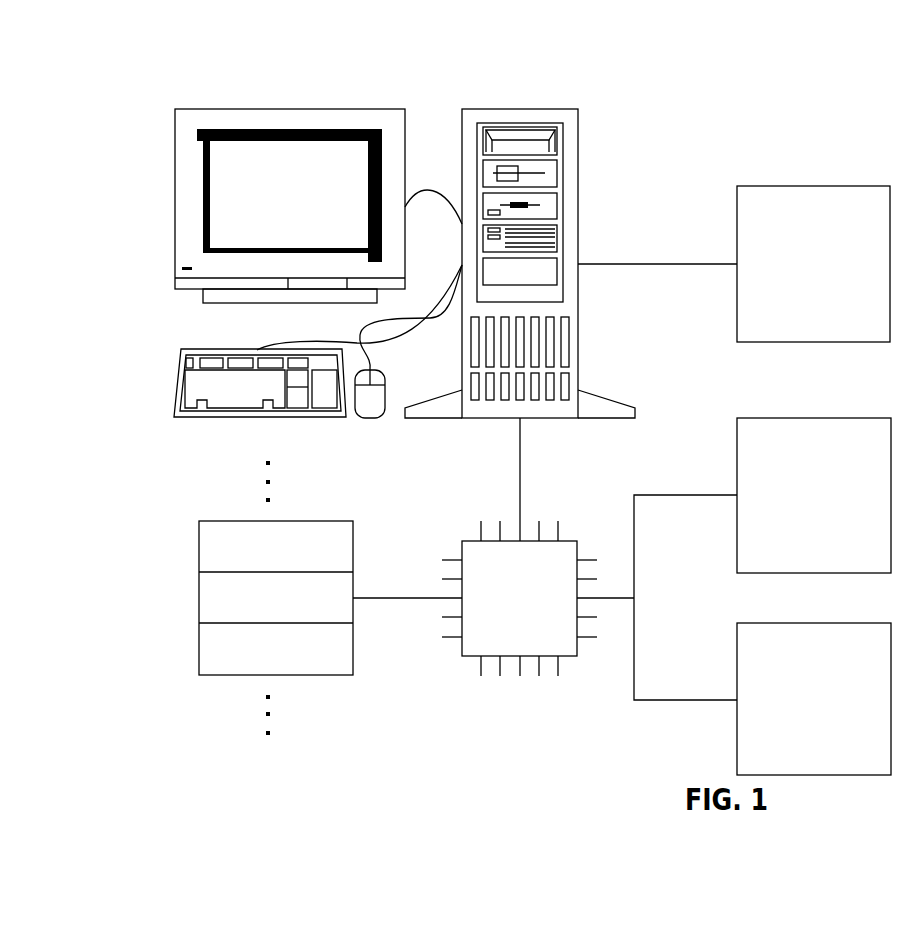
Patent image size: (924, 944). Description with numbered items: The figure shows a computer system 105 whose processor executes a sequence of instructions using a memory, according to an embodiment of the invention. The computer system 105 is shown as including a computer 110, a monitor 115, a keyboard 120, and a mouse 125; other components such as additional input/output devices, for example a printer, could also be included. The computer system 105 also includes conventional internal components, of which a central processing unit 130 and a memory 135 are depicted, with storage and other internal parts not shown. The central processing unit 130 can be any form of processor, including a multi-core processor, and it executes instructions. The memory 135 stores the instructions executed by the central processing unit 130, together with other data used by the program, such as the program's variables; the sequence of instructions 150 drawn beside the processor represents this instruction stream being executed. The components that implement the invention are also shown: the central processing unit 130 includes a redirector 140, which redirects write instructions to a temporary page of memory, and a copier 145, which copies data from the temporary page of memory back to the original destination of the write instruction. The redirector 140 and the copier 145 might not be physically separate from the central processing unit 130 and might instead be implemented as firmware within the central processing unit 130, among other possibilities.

The computer system 105 is at (114, 47).
The computer 110 is at (215, 109).
The monitor 115 is at (500, 109).
The keyboard 120 is at (213, 418).
The mouse 125 is at (370, 418).
The central processing unit 130 is at (462, 548).
The memory 135 is at (778, 186).
The redirector 140 is at (777, 418).
The copier 145 is at (777, 623).
The instructions 150 is at (199, 597).